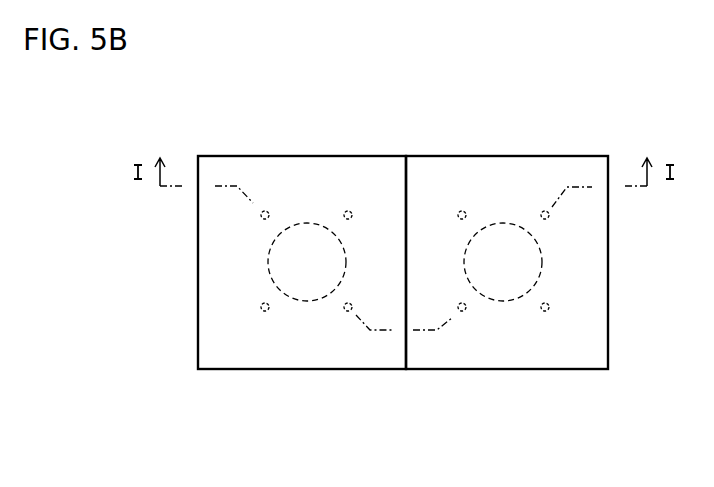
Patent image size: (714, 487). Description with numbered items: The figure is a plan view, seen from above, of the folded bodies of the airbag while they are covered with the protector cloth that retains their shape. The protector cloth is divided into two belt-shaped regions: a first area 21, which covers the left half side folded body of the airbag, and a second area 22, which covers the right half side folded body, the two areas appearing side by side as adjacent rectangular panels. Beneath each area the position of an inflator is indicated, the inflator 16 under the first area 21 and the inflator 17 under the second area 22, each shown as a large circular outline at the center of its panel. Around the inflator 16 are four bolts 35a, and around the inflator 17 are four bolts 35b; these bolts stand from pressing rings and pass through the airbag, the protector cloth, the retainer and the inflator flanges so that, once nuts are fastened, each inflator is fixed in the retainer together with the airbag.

The inflator 16 is at (303, 260).
The inflator 17 is at (517, 255).
The first area 21 is at (287, 338).
The second area 22 is at (488, 340).
The bolts 35a is at (265, 211).
The bolts 35b is at (462, 211).